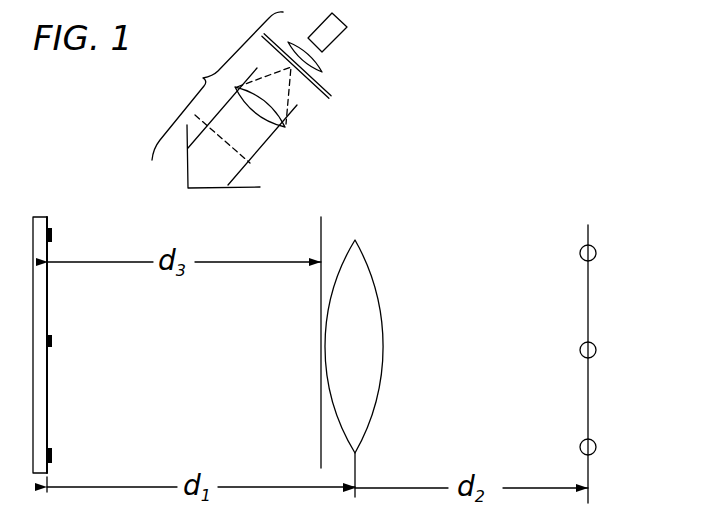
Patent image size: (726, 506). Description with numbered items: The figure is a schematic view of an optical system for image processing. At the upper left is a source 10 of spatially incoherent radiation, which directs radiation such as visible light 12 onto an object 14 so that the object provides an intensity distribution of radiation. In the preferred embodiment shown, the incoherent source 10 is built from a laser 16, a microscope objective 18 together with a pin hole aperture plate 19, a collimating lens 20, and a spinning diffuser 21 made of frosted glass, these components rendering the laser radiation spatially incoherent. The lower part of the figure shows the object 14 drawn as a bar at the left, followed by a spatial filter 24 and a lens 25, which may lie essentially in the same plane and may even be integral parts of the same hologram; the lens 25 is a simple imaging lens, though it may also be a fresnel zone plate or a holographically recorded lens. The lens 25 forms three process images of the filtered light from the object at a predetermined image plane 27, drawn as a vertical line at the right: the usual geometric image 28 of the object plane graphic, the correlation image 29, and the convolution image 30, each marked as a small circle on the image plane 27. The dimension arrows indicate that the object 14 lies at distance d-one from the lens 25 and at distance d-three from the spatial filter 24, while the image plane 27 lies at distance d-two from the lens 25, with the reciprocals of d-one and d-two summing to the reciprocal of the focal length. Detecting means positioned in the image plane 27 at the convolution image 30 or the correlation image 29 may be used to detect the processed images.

The source 10 is at (201, 78).
The visible light 12 is at (213, 190).
The object 14 is at (48, 220).
The laser 16 is at (332, 33).
The microscope objective 18 is at (316, 63).
The pin hole aperture plate 19 is at (332, 97).
The collimating lens 20 is at (291, 125).
The spinning diffuser 21 is at (254, 170).
The spatial filter 24 is at (320, 405).
The lens 25 is at (378, 393).
The image plane 27 is at (587, 228).
The geometric image 28 is at (597, 350).
The correlation image 29 is at (597, 253).
The convolution image 30 is at (597, 447).